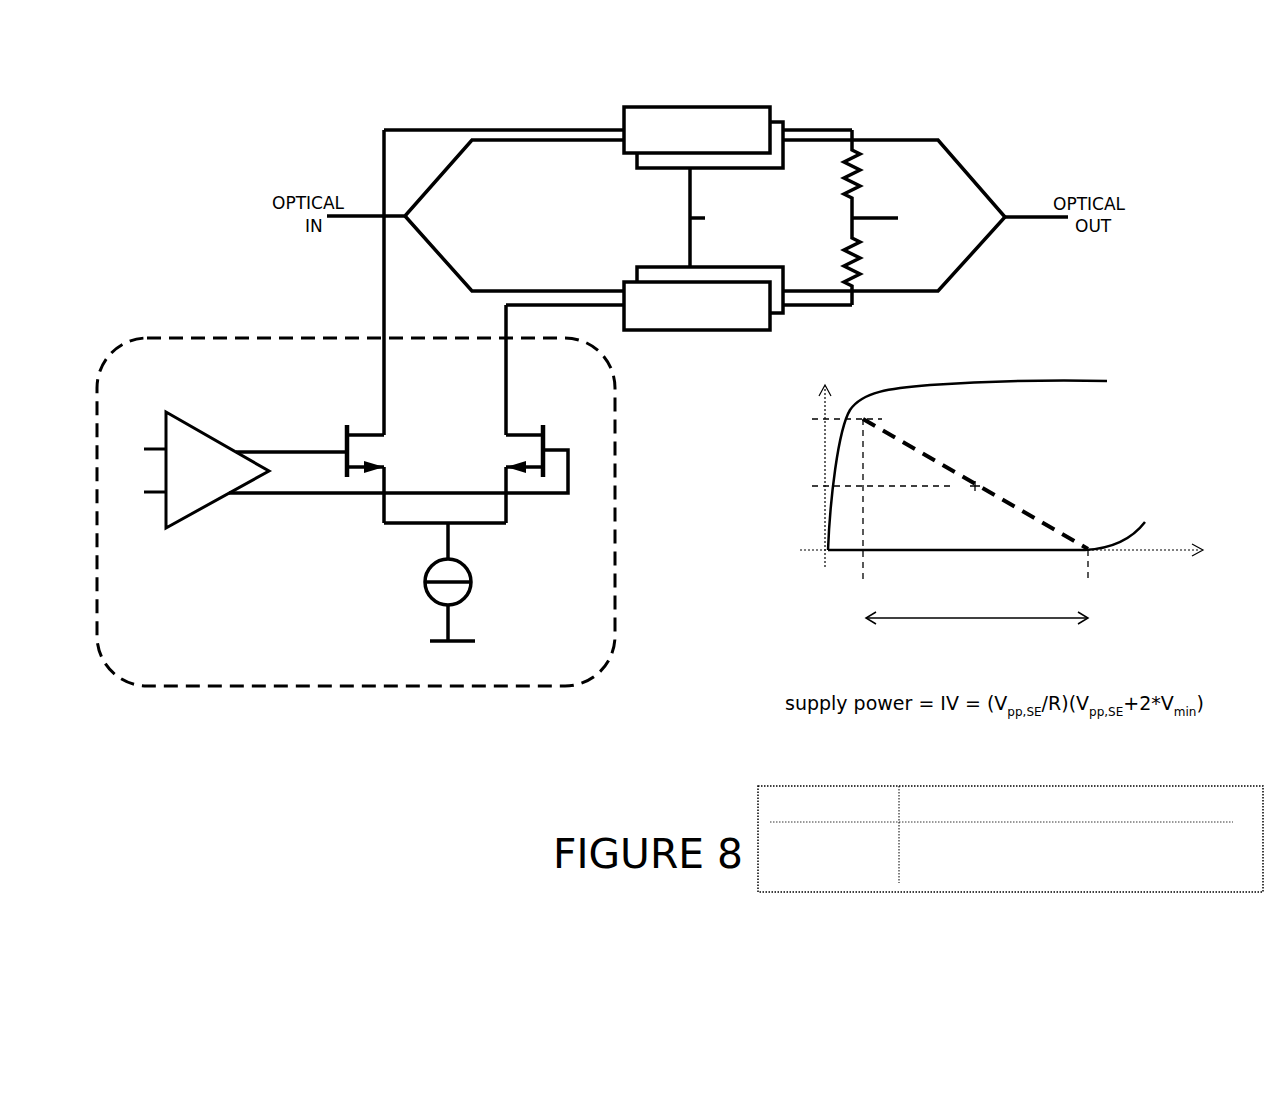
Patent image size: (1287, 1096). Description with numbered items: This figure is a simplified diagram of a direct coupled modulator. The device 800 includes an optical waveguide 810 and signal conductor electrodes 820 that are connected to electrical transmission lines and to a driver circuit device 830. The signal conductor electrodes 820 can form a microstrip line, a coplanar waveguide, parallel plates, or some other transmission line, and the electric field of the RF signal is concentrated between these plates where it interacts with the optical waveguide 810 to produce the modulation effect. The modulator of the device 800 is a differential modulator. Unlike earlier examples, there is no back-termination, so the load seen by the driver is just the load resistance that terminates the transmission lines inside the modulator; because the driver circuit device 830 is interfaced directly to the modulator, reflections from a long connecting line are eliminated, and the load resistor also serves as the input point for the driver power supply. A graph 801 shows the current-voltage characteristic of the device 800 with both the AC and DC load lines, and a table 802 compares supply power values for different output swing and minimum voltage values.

The device 800 is at (337, 134).
The graph 801 is at (1122, 350).
The table 802 is at (771, 758).
The optical waveguide 810 is at (918, 293).
The signal conductor electrodes 820 is at (680, 107).
The driver circuit device 830 is at (282, 338).